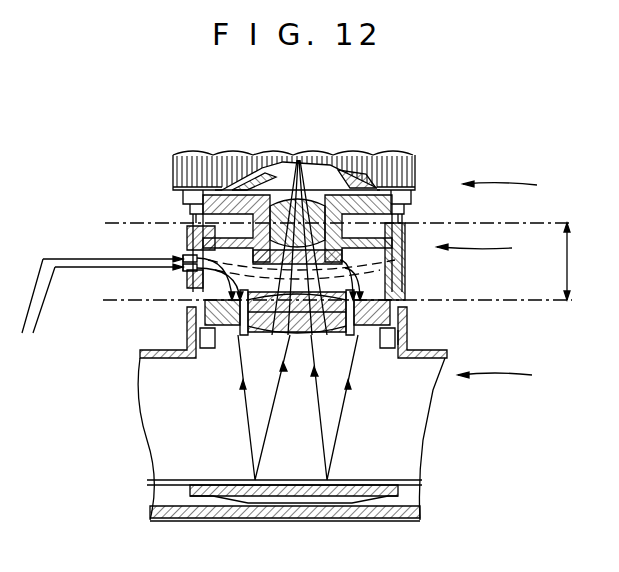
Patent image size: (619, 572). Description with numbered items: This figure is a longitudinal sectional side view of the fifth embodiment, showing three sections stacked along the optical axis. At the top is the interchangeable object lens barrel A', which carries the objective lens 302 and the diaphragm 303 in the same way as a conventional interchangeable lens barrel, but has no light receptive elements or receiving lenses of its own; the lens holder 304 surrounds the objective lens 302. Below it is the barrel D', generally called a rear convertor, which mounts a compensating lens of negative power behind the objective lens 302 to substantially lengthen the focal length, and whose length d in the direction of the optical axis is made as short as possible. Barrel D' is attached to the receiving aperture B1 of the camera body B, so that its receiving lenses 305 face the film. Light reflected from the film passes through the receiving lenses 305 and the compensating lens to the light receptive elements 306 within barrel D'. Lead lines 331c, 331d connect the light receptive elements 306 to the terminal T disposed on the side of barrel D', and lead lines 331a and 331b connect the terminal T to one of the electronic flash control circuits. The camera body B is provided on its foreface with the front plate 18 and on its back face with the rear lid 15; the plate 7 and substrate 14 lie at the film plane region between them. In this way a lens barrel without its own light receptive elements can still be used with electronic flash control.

The diaphragm 303 is at (182, 168).
The lens holder 304 is at (294, 188).
The objective lens 302 is at (318, 200).
The terminal T is at (185, 252).
The lead line 331a is at (120, 257).
The lead line 331b is at (85, 270).
The lead line 331c is at (192, 295).
The lead line 331d is at (197, 292).
The front plate 18 is at (185, 337).
The receiving lenses 305 is at (245, 333).
The light receptive elements 306 is at (262, 338).
The plate 7 is at (190, 480).
The substrate 14 is at (390, 490).
The rear lid 15 is at (225, 518).
The interchangeable object lens barrel A' is at (512, 185).
The barrel D' is at (488, 251).
The camera body B is at (503, 375).
The receiving aperture B1 is at (400, 335).
The length d is at (564, 261).